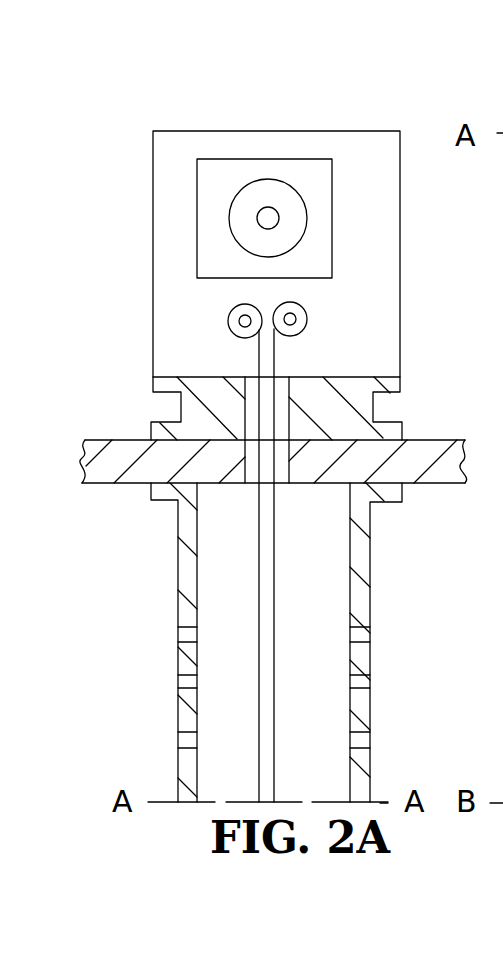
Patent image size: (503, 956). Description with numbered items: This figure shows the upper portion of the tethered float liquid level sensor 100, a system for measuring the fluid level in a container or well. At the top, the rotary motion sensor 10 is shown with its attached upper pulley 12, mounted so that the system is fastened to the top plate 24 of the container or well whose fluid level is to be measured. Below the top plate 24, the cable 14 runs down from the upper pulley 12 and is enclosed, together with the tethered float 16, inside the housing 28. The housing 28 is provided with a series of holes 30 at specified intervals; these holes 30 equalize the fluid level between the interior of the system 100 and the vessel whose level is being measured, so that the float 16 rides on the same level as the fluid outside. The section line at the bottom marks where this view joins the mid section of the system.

The tethered float liquid level sensor 100 is at (160, 122).
The rotary motion sensor 10 is at (223, 177).
The upper pulley 12 is at (277, 190).
The cable 14 is at (274, 587).
The tethered float 16 is at (393, 422).
The well top plate 24 is at (128, 439).
The housing 28 is at (370, 573).
The holes 30 is at (370, 635).